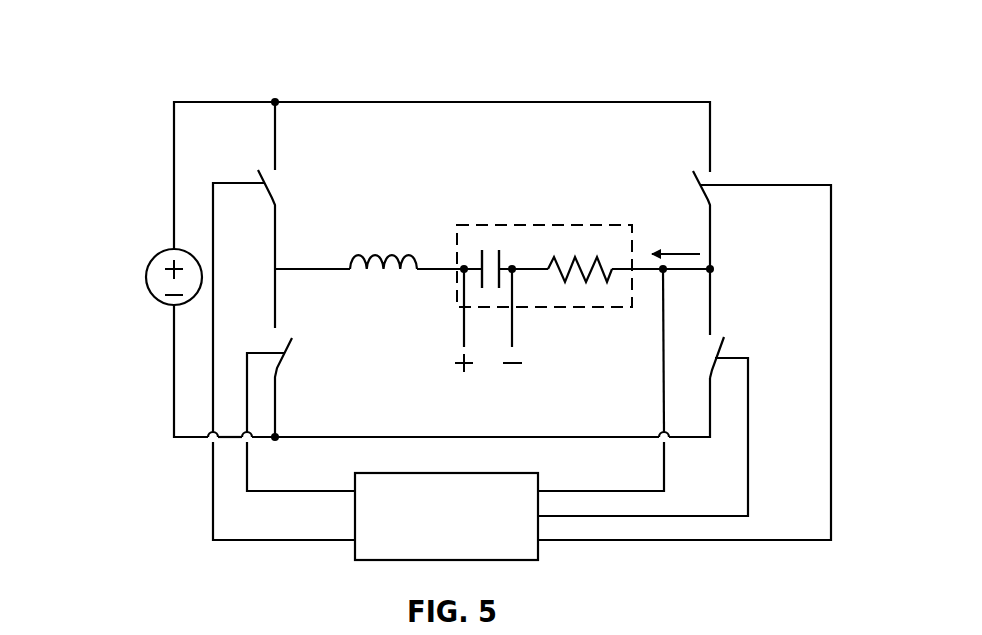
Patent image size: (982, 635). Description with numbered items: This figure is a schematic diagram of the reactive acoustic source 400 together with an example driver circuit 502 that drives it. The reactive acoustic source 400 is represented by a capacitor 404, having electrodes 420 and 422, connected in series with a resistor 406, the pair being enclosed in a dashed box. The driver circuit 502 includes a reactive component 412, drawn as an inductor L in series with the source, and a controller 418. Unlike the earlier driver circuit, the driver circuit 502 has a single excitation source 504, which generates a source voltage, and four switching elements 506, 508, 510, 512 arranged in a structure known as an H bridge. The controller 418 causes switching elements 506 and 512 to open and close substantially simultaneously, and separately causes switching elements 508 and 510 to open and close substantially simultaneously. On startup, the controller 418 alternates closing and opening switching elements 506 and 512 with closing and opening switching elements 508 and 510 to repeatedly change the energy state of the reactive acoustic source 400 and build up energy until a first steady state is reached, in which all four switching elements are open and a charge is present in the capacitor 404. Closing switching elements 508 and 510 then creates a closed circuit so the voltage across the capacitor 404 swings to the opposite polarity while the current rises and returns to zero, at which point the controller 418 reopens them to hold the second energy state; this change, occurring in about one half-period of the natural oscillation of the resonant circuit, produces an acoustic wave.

The driver circuit 502 is at (454, 297).
The excitation source 504 is at (140, 267).
The switching element 506 is at (271, 321).
The switching element 508 is at (285, 347).
The switching element 510 is at (698, 178).
The switching element 512 is at (688, 369).
The reactive component 412 is at (358, 263).
The reactive acoustic source 400 is at (505, 251).
The capacitor 404 is at (530, 244).
The resistor 406 is at (604, 241).
The electrode 420 is at (435, 287).
The electrode 422 is at (443, 301).
The controller 418 is at (424, 503).